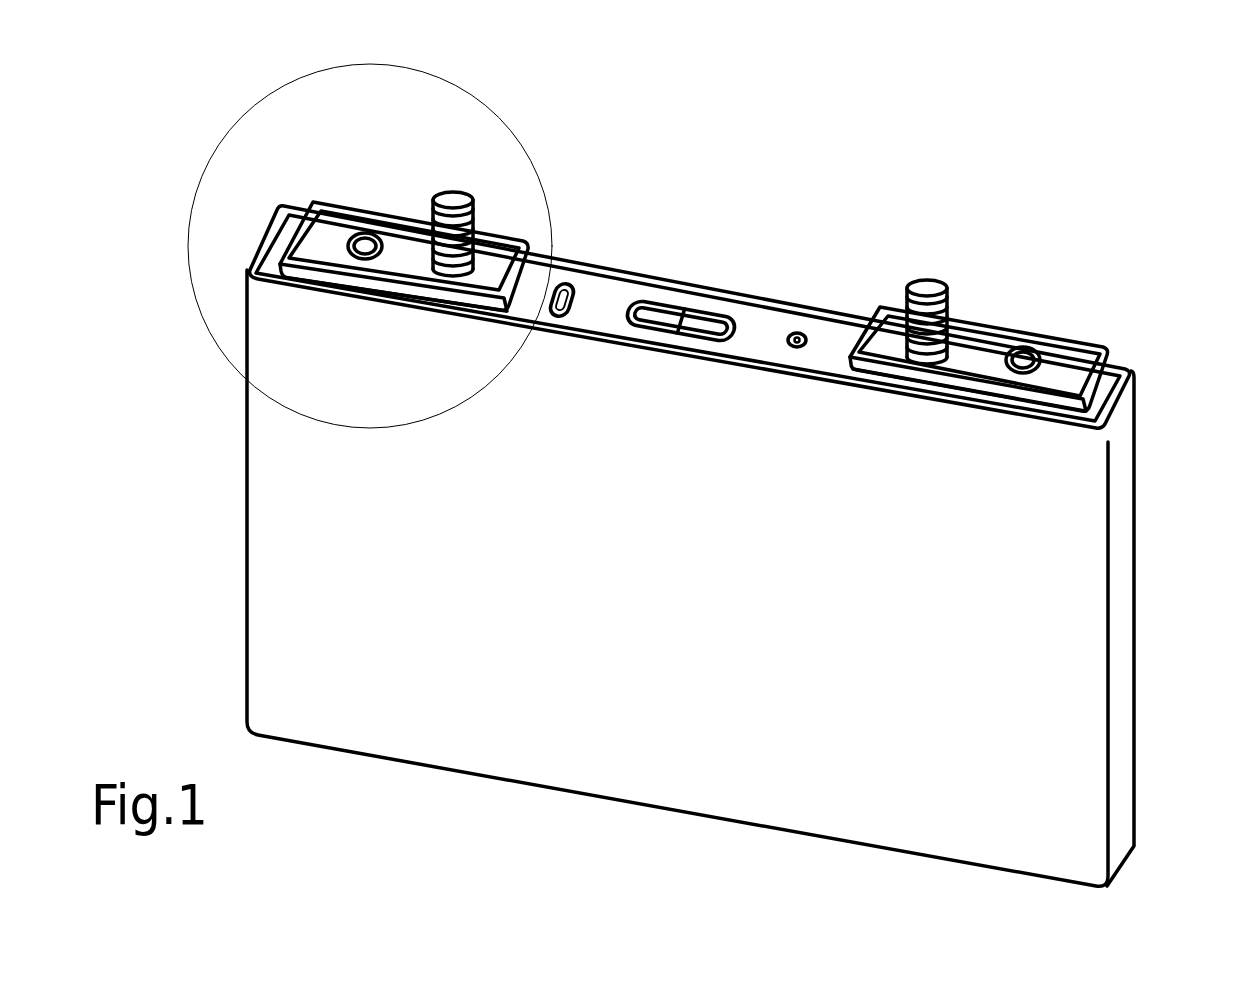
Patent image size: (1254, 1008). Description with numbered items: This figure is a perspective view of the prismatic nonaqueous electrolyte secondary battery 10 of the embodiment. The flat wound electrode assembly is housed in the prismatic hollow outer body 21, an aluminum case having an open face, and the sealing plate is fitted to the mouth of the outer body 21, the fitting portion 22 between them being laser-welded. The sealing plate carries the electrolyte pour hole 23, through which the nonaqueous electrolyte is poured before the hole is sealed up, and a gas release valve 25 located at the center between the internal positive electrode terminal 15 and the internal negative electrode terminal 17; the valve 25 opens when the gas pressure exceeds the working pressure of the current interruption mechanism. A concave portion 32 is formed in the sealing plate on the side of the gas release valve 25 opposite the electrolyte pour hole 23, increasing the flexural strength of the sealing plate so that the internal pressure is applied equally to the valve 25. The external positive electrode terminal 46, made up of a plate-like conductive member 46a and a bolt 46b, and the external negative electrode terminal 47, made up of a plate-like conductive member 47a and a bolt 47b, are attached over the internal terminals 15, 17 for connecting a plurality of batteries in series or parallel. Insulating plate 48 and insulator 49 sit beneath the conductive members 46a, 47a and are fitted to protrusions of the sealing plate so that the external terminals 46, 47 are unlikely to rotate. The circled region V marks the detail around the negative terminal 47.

The prismatic nonaqueous electrolyte secondary battery 10 is at (962, 155).
The internal positive electrode terminal 15 is at (1027, 363).
The internal negative electrode terminal 17 is at (365, 253).
The prismatic hollow outer body 21 is at (283, 466).
The fitting portion 22 is at (1118, 358).
The electrolyte pour hole 23 is at (795, 337).
The gas release valve 25 is at (672, 313).
The concave portion 32 is at (560, 308).
The external positive electrode terminal 46 is at (993, 349).
The plate-like conductive member 46a is at (1067, 362).
The bolt 46b is at (912, 286).
The external negative electrode terminal 47 is at (437, 257).
The plate-like conductive member 47a is at (327, 224).
The bolt 47b is at (457, 203).
The insulating plate 48 is at (897, 377).
The insulator 49 is at (413, 293).
The detail view region V is at (262, 103).